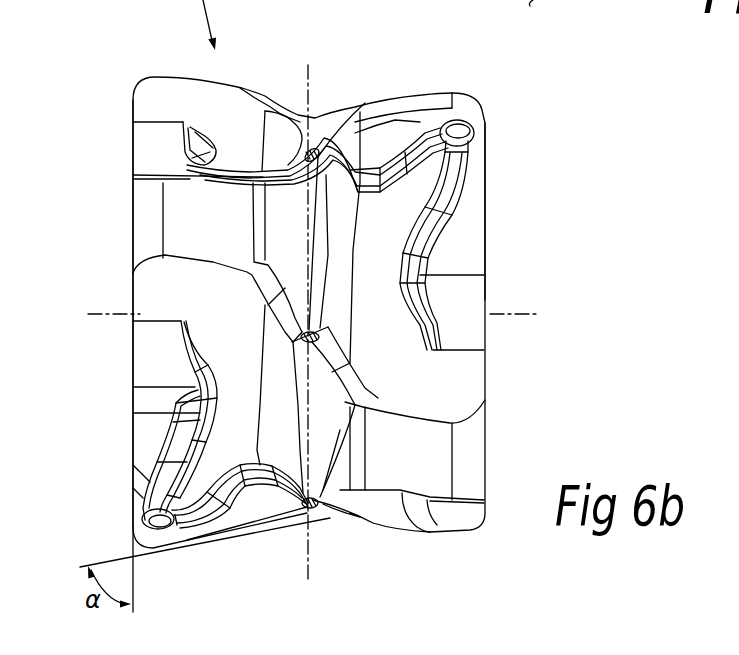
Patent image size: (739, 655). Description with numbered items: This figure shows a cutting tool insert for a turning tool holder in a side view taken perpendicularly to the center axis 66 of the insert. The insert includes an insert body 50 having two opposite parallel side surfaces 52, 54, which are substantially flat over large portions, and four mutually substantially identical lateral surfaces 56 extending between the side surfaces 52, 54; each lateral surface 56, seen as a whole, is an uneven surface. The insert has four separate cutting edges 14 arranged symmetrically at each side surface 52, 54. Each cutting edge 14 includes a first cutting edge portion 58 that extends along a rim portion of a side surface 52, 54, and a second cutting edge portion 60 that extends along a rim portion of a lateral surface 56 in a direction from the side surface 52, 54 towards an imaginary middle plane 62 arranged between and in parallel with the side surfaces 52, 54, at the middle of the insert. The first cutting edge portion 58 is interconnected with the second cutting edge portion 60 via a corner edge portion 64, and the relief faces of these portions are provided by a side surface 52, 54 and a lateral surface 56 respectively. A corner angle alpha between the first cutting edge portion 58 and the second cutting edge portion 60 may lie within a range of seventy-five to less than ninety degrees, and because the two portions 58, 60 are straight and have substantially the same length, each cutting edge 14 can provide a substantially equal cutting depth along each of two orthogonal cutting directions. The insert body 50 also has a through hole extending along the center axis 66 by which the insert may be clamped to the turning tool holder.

The cutting edge 14 is at (461, 86).
The insert body 50 is at (472, 293).
The side surface 52 is at (124, 185).
The side surface 54 is at (496, 166).
The lateral surface 56 is at (304, 270).
The first cutting edge portion 58 is at (130, 481).
The second cutting edge portion 60 is at (381, 122).
The imaginary middle plane 62 is at (316, 76).
The corner edge portion 64 is at (148, 556).
The center axis 66 is at (103, 310).